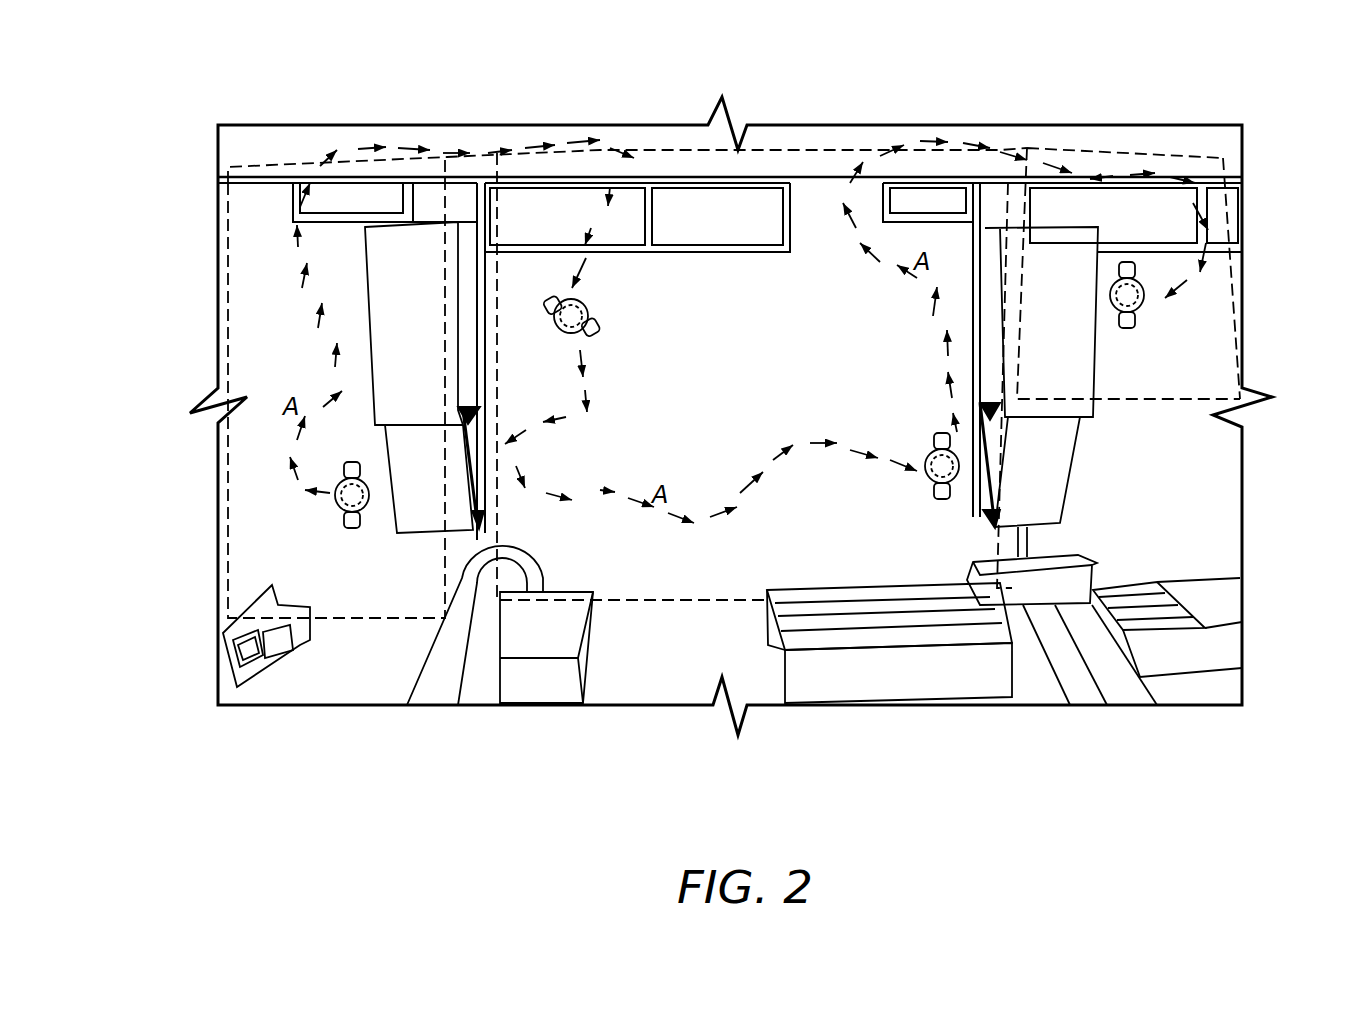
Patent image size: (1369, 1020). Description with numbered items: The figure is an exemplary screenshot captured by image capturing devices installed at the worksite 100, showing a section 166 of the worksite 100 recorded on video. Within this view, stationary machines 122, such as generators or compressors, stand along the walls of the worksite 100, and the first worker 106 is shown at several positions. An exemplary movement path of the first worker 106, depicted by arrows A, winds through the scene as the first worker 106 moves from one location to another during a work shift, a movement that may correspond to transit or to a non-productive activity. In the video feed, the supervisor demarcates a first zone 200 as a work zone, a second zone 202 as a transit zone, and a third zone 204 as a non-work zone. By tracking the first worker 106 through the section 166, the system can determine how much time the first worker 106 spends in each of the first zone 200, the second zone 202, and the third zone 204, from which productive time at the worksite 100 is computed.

The worksite 100 is at (758, 360).
The first worker 106 is at (602, 322).
The stationary machines 122 is at (368, 287).
The section 166 is at (1167, 125).
The first zone 200 is at (265, 167).
The second zone 202 is at (818, 150).
The third zone 204 is at (1232, 263).